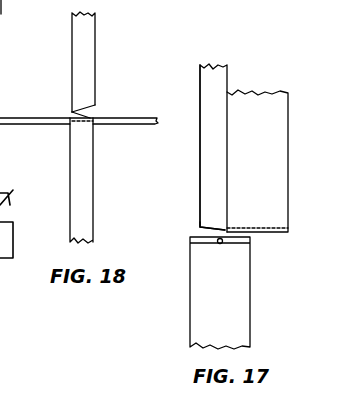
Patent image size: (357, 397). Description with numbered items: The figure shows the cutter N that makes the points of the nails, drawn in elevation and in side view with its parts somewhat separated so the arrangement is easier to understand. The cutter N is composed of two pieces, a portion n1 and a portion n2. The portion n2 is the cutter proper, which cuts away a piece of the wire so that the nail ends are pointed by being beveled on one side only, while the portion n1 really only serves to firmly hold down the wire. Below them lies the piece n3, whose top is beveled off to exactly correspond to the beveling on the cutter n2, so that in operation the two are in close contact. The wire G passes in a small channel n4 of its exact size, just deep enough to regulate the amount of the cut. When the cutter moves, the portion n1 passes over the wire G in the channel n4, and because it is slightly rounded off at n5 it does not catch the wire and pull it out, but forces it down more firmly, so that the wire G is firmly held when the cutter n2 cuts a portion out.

In FIG. 18, the cutter N is at (80, 50).
In FIG. 17, the cutter N is at (257, 130).
In FIG. 18, the wire hold-down portion of cutter n1 is at (86, 81).
In FIG. 17, the wire hold-down portion of cutter n1 is at (216, 164).
In FIG. 17, the cutter proper n2 is at (254, 164).
In FIG. 18, the beveled piece n3 is at (87, 198).
In FIG. 17, the beveled piece n3 is at (223, 306).
In FIG. 18, the channel n4 is at (88, 118).
In FIG. 17, the channel n4 is at (221, 244).
In FIG. 18, the rounded-off portion n5 is at (72, 108).
In FIG. 17, the rounded-off portion n5 is at (211, 225).
In FIG. 18, the wire G is at (107, 120).